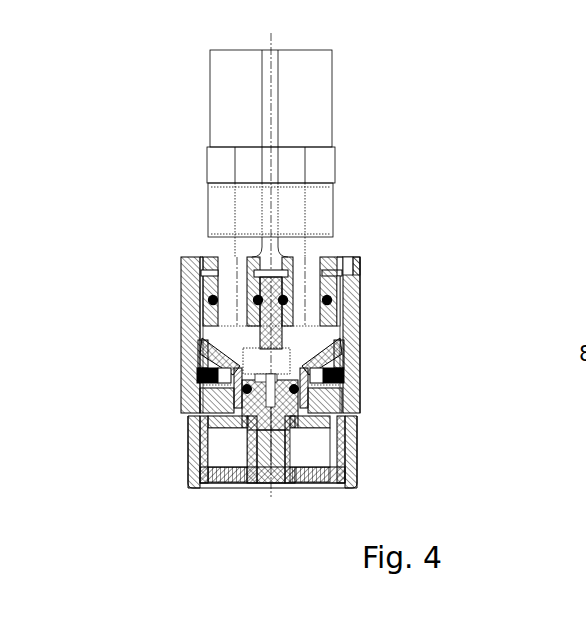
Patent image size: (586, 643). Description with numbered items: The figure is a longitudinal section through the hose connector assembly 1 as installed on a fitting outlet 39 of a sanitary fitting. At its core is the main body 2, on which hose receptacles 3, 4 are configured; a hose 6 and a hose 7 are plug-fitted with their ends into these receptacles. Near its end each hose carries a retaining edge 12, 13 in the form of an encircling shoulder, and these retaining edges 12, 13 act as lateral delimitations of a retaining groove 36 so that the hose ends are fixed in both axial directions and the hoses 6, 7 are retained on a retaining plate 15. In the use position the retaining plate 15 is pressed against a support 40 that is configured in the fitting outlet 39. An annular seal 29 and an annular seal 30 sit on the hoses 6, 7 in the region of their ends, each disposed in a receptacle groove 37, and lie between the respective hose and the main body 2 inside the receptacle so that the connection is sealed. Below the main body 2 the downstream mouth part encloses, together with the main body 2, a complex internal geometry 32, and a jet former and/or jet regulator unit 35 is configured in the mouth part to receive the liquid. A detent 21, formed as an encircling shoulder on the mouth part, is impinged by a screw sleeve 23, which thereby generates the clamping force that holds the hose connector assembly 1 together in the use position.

The hose connector assembly 1 is at (271, 265).
The main body 2 is at (203, 345).
The hose receptacle 3 is at (240, 283).
The hose receptacle 4 is at (306, 282).
The hose 6 is at (235, 63).
The hose 7 is at (259, 98).
The retaining edge 12 is at (203, 268).
The retaining edge 13 is at (332, 272).
The retaining plate 15 is at (338, 273).
The detent 21 is at (200, 387).
The screw sleeve 23 is at (347, 450).
The annular seal 29 is at (209, 299).
The annular seal 30 is at (332, 300).
The internal geometry 32 is at (332, 359).
The jet former and/or jet regulator unit 35 is at (230, 399).
The retaining groove 36 is at (206, 272).
The receptacle groove 37 is at (338, 308).
The fitting outlet 39 is at (360, 377).
The support 40 is at (353, 268).